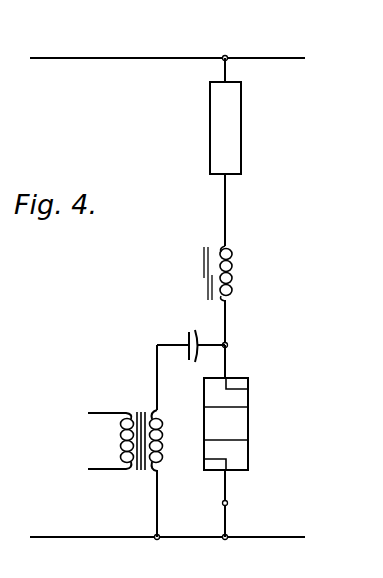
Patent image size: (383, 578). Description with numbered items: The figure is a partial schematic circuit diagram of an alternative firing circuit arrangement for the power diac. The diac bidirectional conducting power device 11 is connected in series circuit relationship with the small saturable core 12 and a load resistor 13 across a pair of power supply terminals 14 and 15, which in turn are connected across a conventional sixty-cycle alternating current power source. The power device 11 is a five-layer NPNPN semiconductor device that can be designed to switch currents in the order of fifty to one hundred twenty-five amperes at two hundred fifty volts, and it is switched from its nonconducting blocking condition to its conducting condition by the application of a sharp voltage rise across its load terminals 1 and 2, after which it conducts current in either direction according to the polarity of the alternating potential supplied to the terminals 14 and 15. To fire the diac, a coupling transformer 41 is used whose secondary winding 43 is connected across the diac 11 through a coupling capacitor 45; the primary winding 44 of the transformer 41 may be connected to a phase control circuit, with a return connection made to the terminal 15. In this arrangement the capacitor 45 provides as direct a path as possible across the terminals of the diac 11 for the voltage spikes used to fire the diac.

The load terminal 1 is at (230, 503).
The load terminal 2 is at (229, 345).
The diac bidirectional conducting power device 11 is at (250, 420).
The small saturable core 12 is at (223, 245).
The load resistor 13 is at (232, 104).
The power supply terminal 14 is at (86, 57).
The power supply terminal 15 is at (268, 538).
The coupling transformer 41 is at (146, 399).
The secondary winding 43 is at (173, 441).
The transformer primary winding 44 is at (121, 428).
The coupling capacitor 45 is at (185, 334).